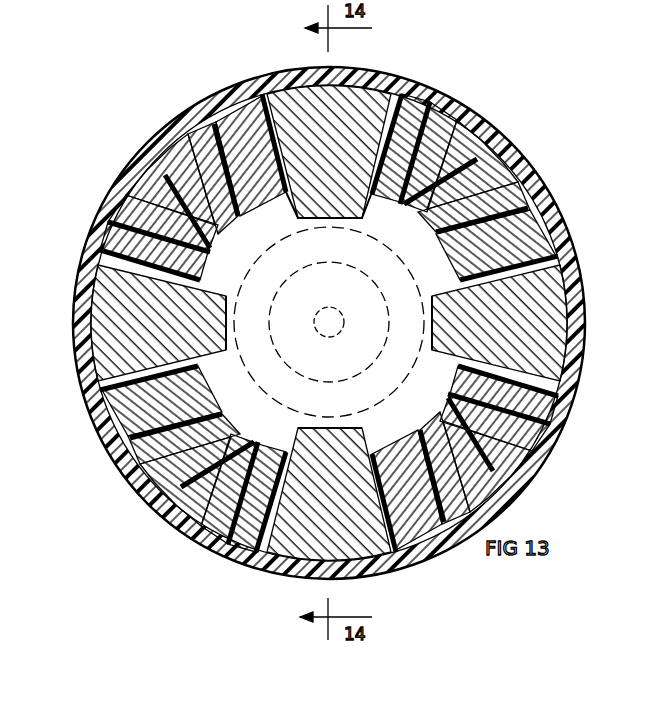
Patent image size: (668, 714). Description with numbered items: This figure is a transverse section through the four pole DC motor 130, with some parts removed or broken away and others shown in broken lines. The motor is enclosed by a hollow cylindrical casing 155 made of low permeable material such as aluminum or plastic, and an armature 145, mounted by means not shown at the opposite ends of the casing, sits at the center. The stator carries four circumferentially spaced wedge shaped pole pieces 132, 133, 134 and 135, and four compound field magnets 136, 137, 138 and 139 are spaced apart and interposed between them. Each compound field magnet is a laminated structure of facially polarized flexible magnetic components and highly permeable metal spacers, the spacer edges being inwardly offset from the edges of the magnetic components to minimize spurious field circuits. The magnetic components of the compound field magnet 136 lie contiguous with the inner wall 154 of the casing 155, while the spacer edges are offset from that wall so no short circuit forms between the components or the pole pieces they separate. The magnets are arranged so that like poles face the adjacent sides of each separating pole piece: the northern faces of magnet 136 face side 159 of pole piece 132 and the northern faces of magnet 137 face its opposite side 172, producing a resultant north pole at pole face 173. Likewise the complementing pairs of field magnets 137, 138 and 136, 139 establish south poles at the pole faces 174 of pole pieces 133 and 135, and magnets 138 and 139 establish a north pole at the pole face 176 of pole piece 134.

The four pole DC motor 130 is at (573, 408).
The pole piece 132 is at (327, 74).
The pole piece 133 is at (583, 322).
The pole piece 134 is at (363, 575).
The pole piece 135 is at (74, 336).
The compound field magnet 136 is at (210, 113).
The compound field magnet 137 is at (470, 187).
The compound field magnet 138 is at (512, 483).
The compound field magnet 139 is at (156, 454).
The armature 145 is at (393, 250).
The inner wall of the casing 154 is at (103, 370).
The hollow cylindrical casing 155 is at (102, 437).
The side of pole piece 159 is at (298, 216).
The opposite side of pole piece 172 is at (366, 214).
The pole face 173 is at (345, 232).
The pole faces 174 is at (228, 340).
The pole face 176 is at (348, 417).